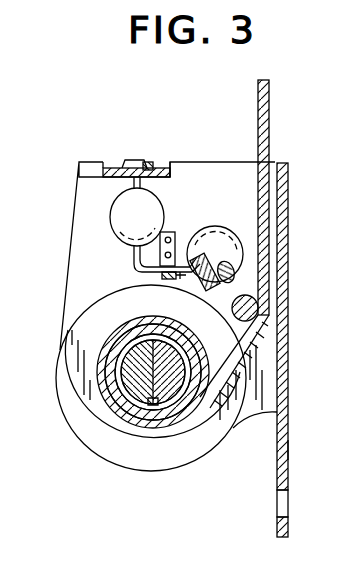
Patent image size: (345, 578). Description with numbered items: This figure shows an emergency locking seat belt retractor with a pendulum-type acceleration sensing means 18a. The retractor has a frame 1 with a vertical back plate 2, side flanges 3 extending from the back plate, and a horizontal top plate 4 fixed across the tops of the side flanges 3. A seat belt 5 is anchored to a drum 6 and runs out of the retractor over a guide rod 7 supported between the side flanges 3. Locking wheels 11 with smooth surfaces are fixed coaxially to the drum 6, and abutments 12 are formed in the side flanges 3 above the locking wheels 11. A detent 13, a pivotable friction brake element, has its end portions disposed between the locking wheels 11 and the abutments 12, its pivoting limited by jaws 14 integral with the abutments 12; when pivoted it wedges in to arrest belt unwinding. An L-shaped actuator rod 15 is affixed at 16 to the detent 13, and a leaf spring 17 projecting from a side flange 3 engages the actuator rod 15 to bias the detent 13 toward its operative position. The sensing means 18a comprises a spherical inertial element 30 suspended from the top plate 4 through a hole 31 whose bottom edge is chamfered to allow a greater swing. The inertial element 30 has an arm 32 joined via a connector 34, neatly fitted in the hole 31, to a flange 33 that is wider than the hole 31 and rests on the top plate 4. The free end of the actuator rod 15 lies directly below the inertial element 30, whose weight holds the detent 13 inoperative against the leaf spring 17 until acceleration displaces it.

The frame 1 is at (292, 163).
The back plate 2 is at (290, 448).
The side flanges 3 is at (257, 372).
The top plate 4 is at (103, 177).
The seat belt 5 is at (268, 118).
The drum 6 is at (143, 390).
The guide rod 7 is at (260, 310).
The locking wheels 11 is at (92, 330).
The abutments 12 is at (197, 262).
The detent 13 is at (222, 268).
The jaws 14 is at (228, 277).
The actuator rod 15 is at (134, 260).
The affixing point 16 is at (185, 282).
The leaf spring 17 is at (173, 232).
The acceleration sensing means 18a is at (115, 163).
The inertial element 30 is at (127, 223).
The hole 31 is at (130, 177).
The arm 32 is at (170, 176).
The flange 33 is at (133, 167).
The connector 34 is at (148, 166).